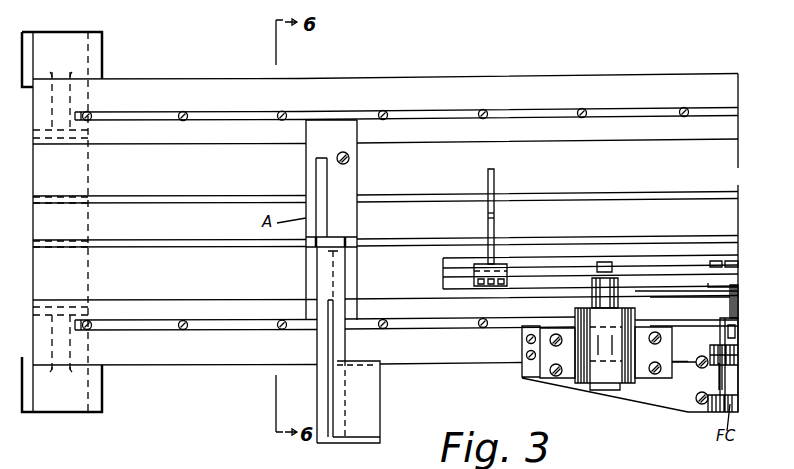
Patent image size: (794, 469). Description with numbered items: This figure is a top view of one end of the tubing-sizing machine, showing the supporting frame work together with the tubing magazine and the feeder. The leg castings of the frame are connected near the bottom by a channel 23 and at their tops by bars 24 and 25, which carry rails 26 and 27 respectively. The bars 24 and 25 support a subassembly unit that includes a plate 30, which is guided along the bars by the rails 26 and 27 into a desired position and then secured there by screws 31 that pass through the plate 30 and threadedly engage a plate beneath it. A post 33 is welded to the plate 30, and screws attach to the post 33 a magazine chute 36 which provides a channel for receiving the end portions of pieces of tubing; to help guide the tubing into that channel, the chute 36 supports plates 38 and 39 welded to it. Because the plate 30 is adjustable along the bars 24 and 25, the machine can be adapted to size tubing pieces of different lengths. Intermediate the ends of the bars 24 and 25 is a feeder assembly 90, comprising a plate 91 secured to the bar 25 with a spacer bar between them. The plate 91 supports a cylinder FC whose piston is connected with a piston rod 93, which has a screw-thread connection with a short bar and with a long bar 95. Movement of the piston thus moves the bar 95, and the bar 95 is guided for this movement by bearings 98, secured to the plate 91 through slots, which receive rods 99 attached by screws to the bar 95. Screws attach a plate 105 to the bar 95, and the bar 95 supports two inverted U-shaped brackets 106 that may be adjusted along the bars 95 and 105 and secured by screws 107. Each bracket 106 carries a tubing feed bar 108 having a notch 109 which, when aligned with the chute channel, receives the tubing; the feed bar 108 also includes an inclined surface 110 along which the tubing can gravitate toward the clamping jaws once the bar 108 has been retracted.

The channel 23 is at (692, 193).
The bar 24 is at (173, 79).
The bar 25 is at (168, 297).
The rail 26 is at (327, 89).
The rail 27 is at (237, 334).
The plate 30 is at (306, 172).
The screws 31 is at (336, 154).
The post 33 is at (357, 236).
The magazine chute 36 is at (346, 278).
The plate 38 is at (328, 344).
The plate 39 is at (382, 416).
The feeder assembly 90 is at (705, 411).
The plate 91 is at (671, 402).
The piston rod 93 is at (731, 300).
The long bar 95 is at (589, 268).
The bearings 98 is at (590, 381).
The rods 99 is at (592, 299).
The plate 105 is at (528, 258).
The inverted U-shaped brackets 106 is at (474, 267).
The screws 107 is at (497, 288).
The tubing feed bar 108 is at (497, 221).
The notch 109 is at (488, 219).
The inclined surface 110 is at (494, 185).